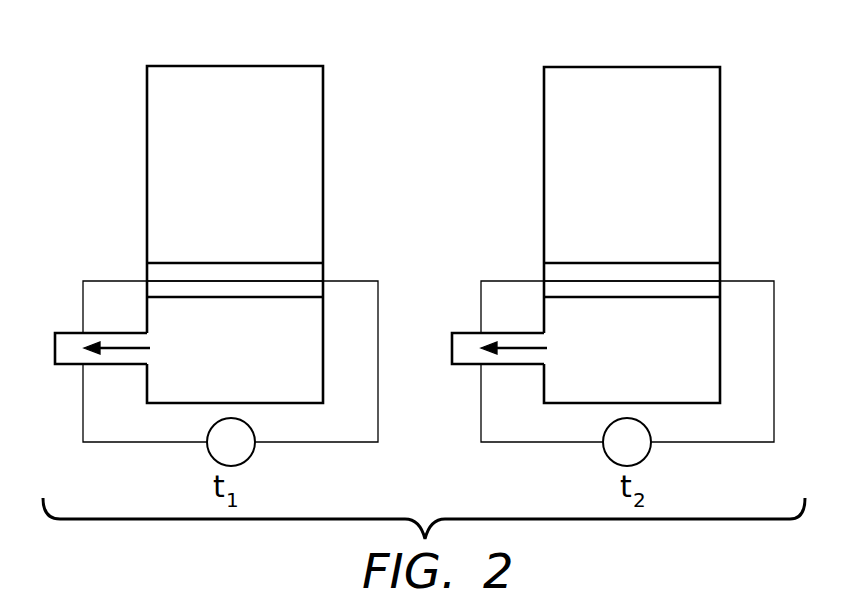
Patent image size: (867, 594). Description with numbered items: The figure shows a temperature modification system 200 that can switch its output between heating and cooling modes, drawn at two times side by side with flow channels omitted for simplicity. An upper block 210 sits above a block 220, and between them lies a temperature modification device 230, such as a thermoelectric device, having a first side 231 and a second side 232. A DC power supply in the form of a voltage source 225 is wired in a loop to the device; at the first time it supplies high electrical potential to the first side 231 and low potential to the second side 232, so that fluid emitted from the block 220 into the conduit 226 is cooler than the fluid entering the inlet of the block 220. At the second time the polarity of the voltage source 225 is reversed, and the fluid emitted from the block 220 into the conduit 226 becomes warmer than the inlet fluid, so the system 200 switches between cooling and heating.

The temperature modification system 200 is at (460, 38).
The first thermoelectric block 210 is at (307, 160).
The block 220 is at (303, 373).
The voltage source 225 is at (253, 455).
The conduit 226 is at (67, 331).
The temperature modification device 230 is at (322, 270).
The first side 231 is at (158, 273).
The second side 232 is at (163, 291).